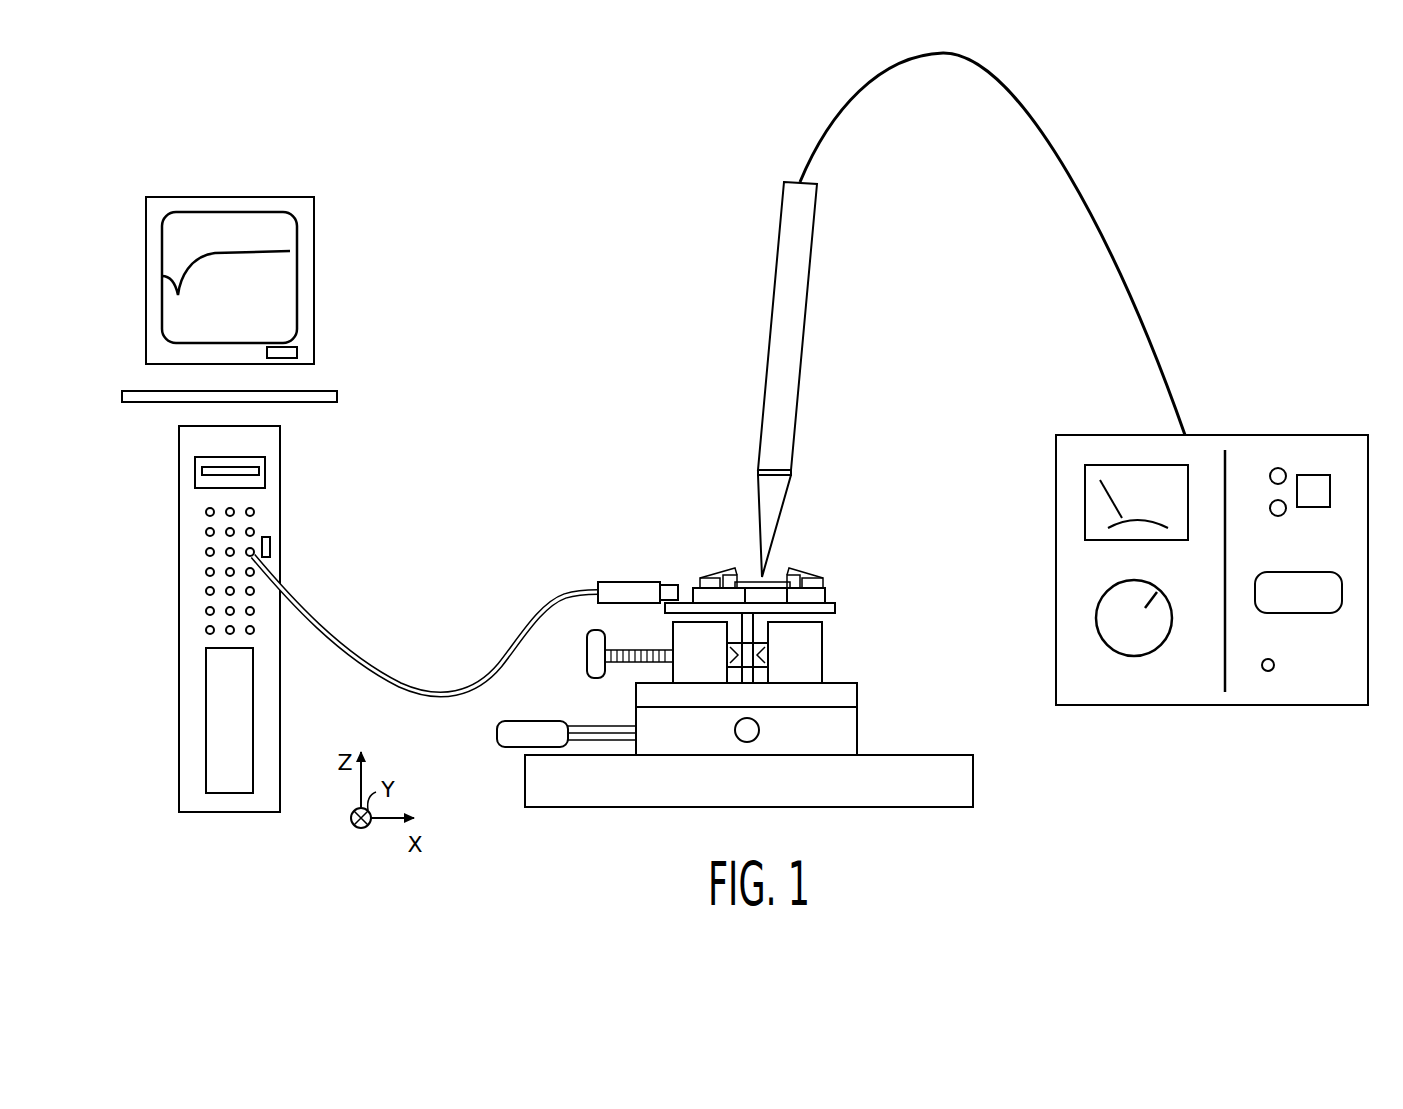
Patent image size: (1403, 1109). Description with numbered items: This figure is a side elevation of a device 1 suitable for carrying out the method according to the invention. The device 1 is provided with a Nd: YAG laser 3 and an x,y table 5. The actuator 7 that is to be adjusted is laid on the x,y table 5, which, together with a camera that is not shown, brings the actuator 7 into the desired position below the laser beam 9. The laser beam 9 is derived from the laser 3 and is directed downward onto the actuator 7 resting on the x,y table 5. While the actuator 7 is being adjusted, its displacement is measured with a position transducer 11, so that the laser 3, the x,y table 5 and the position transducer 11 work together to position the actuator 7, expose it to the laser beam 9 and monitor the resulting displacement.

The device 1 is at (1148, 200).
The Nd: YAG laser 3 is at (1260, 447).
The x,y table 5 is at (833, 653).
The actuator 7 is at (780, 567).
The laser beam 9 is at (741, 517).
The position transducer 11 is at (347, 571).